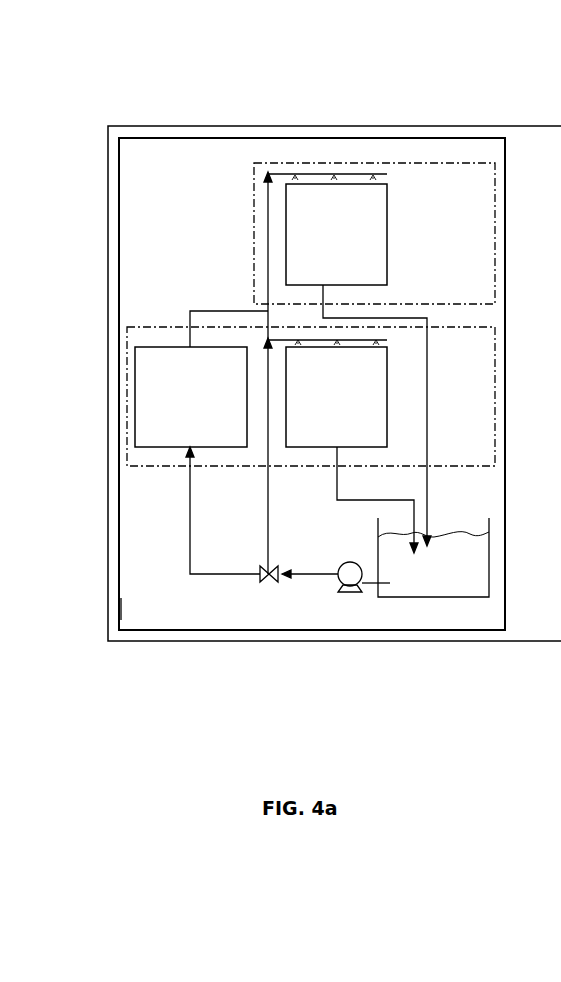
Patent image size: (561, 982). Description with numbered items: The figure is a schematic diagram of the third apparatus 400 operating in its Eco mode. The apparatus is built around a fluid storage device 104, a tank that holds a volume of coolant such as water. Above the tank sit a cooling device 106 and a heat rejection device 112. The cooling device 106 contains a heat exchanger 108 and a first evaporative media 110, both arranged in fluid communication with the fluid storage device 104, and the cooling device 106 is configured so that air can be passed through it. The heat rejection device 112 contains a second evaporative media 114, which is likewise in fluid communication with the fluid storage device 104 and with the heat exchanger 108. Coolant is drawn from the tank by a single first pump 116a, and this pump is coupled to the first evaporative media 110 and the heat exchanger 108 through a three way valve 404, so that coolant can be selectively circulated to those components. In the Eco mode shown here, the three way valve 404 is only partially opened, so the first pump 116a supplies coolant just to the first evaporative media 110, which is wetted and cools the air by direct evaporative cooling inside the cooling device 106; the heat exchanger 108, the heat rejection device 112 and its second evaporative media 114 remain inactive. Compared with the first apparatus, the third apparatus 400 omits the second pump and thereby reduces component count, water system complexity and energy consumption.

The third apparatus 400 is at (488, 134).
The heat rejection device 112 is at (393, 163).
The second evaporative media 114 is at (318, 183).
The cooling device 106 is at (168, 328).
The heat exchanger 108 is at (135, 402).
The first evaporative media 110 is at (323, 447).
The three way valve 404 is at (262, 570).
The first pump 116a is at (337, 566).
The fluid storage device 104 is at (440, 597).